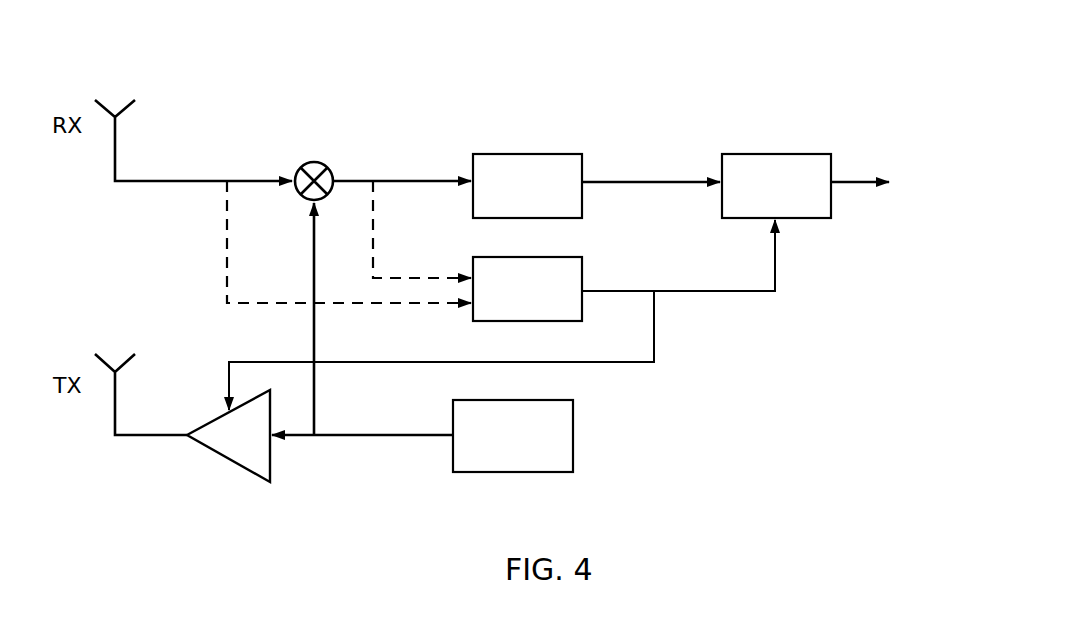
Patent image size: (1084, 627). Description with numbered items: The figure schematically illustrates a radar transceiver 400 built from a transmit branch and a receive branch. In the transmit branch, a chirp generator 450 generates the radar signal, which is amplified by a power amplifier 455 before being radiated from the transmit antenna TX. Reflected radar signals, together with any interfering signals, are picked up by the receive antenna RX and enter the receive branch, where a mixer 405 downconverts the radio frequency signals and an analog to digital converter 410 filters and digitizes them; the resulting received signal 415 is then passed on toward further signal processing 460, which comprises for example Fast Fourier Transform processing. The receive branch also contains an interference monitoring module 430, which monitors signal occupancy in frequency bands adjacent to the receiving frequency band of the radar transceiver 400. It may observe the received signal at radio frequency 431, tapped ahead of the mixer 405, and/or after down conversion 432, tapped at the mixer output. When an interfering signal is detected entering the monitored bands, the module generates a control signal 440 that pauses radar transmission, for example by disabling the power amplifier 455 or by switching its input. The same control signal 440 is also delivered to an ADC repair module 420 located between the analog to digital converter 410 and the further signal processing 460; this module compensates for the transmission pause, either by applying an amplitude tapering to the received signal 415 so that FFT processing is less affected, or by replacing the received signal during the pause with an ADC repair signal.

The radar transceiver 400 is at (846, 77).
The mixer 405 is at (315, 162).
The analog to digital converter 410 is at (527, 186).
The received signal 415 is at (651, 162).
The ADC repair module 420 is at (776, 186).
The interference monitoring module 430 is at (527, 289).
The received signal at radio frequency 431 is at (323, 242).
The received signal after down conversion 432 is at (422, 229).
The control signal 440 is at (532, 315).
The chirp generator 450 is at (422, 436).
The power amplifier 455 is at (220, 455).
The further signal processing 460 is at (892, 182).